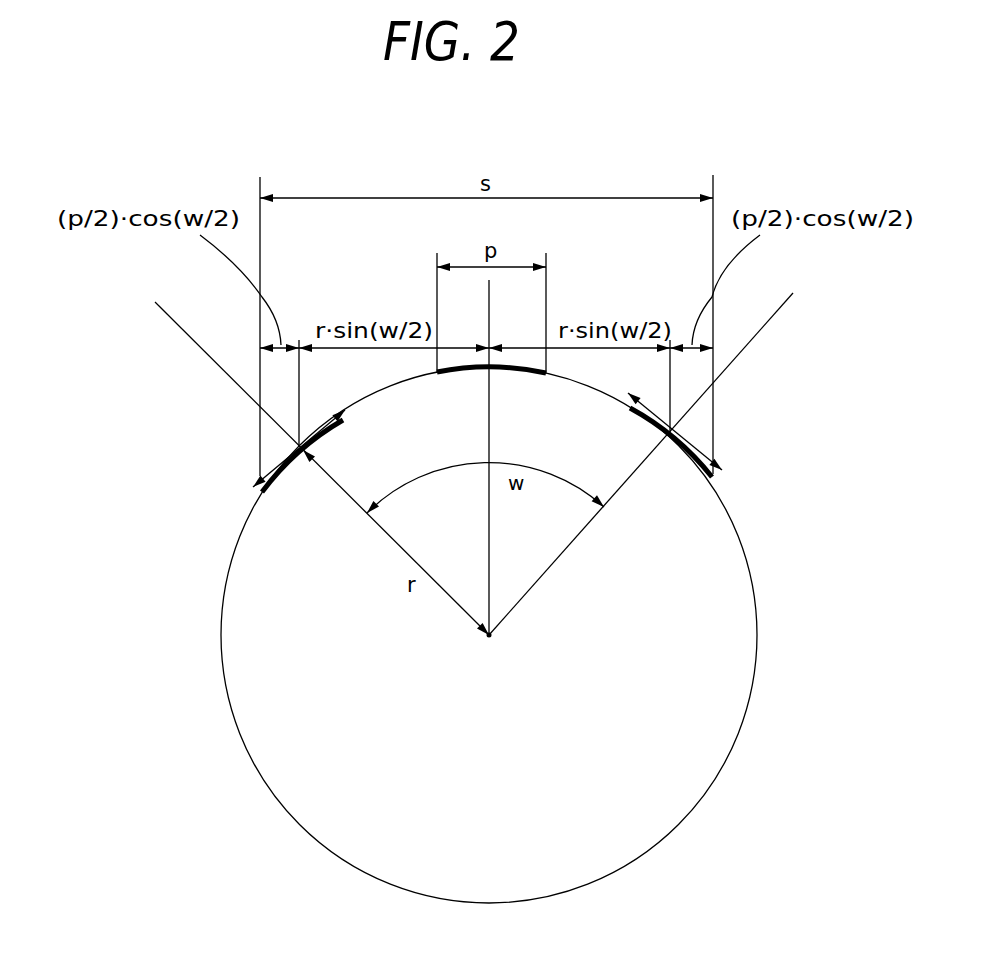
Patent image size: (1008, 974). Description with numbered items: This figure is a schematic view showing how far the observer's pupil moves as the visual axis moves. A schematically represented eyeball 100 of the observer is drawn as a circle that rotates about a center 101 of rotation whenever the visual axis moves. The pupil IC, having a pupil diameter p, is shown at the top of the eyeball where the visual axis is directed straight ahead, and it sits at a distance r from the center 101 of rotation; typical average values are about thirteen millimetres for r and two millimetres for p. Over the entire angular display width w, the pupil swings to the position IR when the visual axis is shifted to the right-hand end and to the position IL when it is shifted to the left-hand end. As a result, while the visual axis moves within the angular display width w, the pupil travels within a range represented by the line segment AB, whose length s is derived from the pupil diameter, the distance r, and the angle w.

The eyeball 100 is at (222, 633).
The center of rotation 101 is at (491, 638).
The left end point of line segment AB A is at (322, 468).
The right end point of line segment AB B is at (641, 464).
The pupil with visual axis directed straight ahead IC is at (491, 389).
The pupil position at left-hand end IL is at (299, 456).
The pupil position at right-hand end IR is at (675, 441).